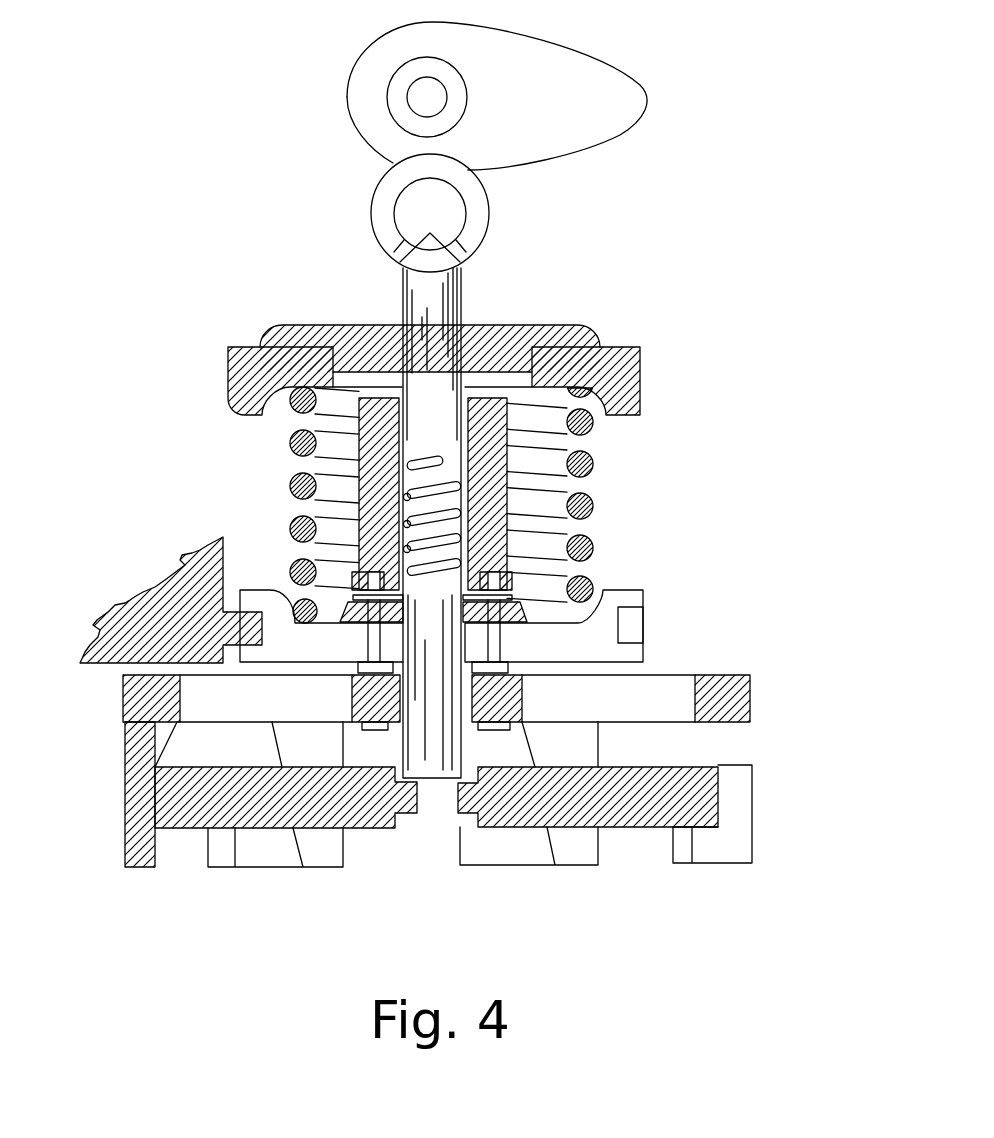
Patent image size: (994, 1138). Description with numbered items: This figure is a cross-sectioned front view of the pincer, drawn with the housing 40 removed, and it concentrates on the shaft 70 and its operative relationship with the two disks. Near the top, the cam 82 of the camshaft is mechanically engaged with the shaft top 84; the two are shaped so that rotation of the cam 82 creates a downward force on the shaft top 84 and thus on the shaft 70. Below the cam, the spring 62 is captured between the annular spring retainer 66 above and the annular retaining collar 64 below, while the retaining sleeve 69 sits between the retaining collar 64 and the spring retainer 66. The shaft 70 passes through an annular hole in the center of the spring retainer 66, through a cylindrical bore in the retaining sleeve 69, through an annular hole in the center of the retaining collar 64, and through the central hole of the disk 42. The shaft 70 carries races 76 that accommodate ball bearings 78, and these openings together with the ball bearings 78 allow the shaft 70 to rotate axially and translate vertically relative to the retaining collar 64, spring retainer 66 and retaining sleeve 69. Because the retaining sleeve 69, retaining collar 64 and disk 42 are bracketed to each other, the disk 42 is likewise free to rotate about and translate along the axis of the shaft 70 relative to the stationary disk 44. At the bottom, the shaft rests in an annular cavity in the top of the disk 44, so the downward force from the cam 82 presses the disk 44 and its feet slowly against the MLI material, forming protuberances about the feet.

The housing 40 is at (163, 593).
The disk 42 is at (663, 672).
The disk 44 is at (633, 765).
The spring 62 is at (593, 508).
The retaining collar 64 is at (642, 597).
The spring retainer 66 is at (642, 368).
The retaining sleeve 69 is at (555, 443).
The shaft 70 is at (465, 293).
The races 76 is at (410, 495).
The ball bearings 78 is at (410, 465).
The cam 82 is at (570, 38).
The shaft top 84 is at (489, 207).